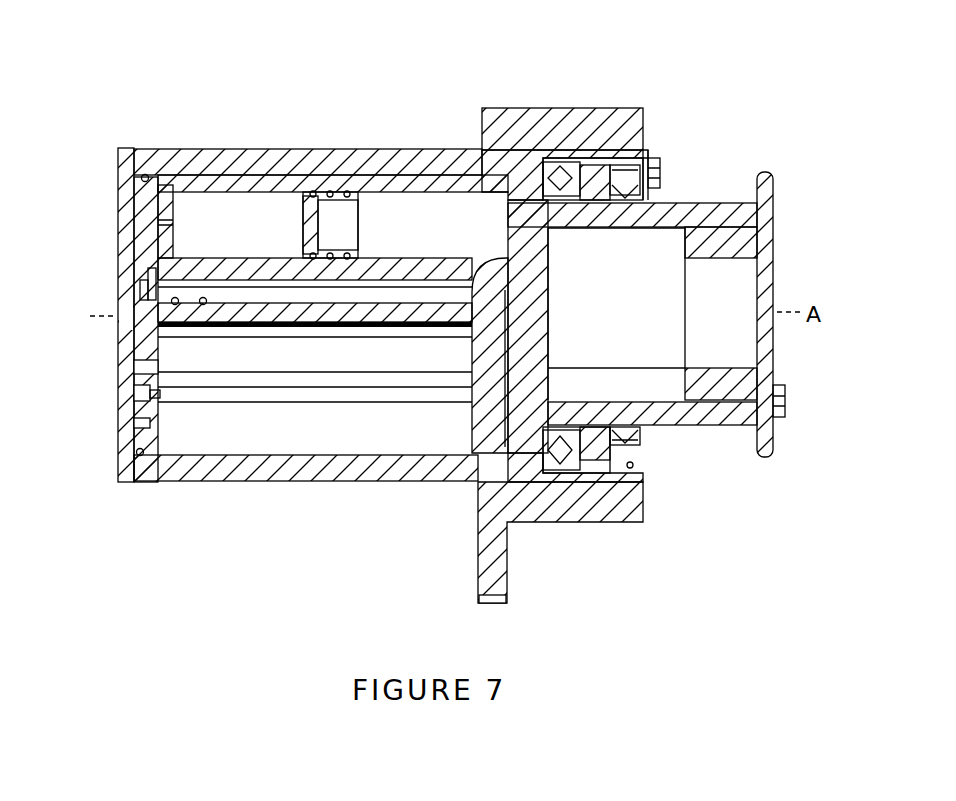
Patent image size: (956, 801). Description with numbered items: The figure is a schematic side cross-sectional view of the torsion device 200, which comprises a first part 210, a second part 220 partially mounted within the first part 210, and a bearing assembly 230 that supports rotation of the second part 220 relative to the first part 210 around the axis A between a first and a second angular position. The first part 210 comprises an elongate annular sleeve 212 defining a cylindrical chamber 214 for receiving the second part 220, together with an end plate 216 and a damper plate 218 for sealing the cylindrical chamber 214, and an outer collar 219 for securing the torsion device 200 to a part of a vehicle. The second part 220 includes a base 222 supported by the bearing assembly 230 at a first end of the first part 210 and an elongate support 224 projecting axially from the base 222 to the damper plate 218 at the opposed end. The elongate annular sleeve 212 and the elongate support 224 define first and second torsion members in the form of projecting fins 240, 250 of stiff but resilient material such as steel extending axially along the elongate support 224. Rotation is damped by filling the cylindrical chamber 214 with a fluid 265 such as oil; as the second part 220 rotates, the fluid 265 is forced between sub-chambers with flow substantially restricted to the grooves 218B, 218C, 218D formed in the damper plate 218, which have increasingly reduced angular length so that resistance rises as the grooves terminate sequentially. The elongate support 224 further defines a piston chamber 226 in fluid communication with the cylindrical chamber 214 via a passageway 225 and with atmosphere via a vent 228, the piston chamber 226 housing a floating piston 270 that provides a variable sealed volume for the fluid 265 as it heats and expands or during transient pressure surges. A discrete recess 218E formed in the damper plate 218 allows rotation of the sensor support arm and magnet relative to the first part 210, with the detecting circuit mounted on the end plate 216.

The torsion device 200 is at (237, 68).
The first part 210 is at (266, 512).
The elongate annular sleeve 212 is at (375, 482).
The cylindrical chamber 214 is at (406, 446).
The end plate 216 is at (122, 482).
The damper plate 218 is at (162, 470).
The groove 218B is at (152, 378).
The groove 218C is at (142, 396).
The groove 218D is at (136, 428).
The discrete recess 218E is at (150, 292).
The outer collar 219 is at (507, 585).
The second part 220 is at (684, 158).
The base 222 is at (728, 427).
The elongate support 224 is at (392, 173).
The passageway 225 is at (158, 212).
The piston chamber 226 is at (270, 192).
The vent 228 is at (520, 247).
The bearing assembly 230 is at (654, 465).
The projecting fin 240 is at (152, 369).
The projecting fin 250 is at (163, 300).
The fluid 265 is at (206, 205).
The floating piston 270 is at (335, 190).